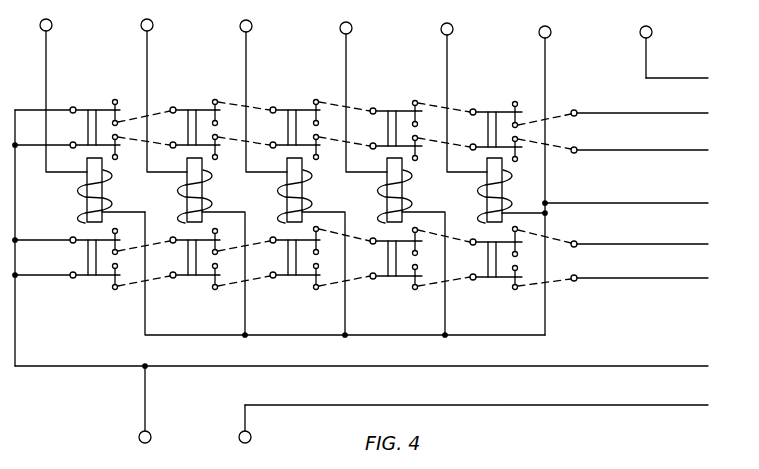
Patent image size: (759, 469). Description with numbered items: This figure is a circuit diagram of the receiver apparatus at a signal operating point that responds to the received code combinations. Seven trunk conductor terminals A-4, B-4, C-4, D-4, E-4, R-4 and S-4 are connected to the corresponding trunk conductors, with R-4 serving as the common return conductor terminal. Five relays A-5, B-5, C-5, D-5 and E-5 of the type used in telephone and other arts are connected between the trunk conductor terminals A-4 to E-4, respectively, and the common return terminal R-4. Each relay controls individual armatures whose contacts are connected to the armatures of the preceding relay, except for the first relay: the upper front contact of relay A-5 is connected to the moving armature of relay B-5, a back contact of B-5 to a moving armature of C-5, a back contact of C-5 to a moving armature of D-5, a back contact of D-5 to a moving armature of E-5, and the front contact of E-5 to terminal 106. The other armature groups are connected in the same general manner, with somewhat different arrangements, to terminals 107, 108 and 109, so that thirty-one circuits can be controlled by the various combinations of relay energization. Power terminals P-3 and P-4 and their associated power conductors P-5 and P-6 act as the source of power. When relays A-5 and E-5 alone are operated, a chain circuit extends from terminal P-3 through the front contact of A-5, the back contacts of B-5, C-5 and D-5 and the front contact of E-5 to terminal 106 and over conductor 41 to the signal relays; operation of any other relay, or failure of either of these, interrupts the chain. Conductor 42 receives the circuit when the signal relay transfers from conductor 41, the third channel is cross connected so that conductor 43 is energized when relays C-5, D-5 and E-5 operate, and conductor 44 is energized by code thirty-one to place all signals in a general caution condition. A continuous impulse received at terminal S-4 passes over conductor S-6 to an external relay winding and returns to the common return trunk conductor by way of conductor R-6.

The trunk conductor terminal A-4 is at (66, 93).
The trunk conductor terminal B-4 is at (167, 93).
The trunk conductor terminal C-4 is at (267, 94).
The trunk conductor terminal D-4 is at (368, 95).
The trunk conductor terminal E-4 is at (467, 95).
The common return conductor terminal R-4 is at (566, 178).
The trunk conductor terminal S-4 is at (667, 50).
The conductor S-6 is at (677, 67).
The conductor R-6 is at (626, 191).
The relay A-5 is at (88, 190).
The relay B-5 is at (195, 246).
The relay C-5 is at (293, 246).
The relay D-5 is at (395, 246).
The relay E-5 is at (497, 190).
The terminal 106 is at (563, 103).
The terminal 107 is at (564, 138).
The terminal 108 is at (567, 233).
The terminal 109 is at (567, 270).
The conductor 41 is at (642, 101).
The conductor 42 is at (642, 139).
The conductor 43 is at (642, 231).
The conductor 44 is at (642, 265).
The power conductor P-5 is at (361, 355).
The power conductor P-6 is at (476, 393).
The power terminal P-3 is at (166, 407).
The power terminal P-4 is at (266, 427).